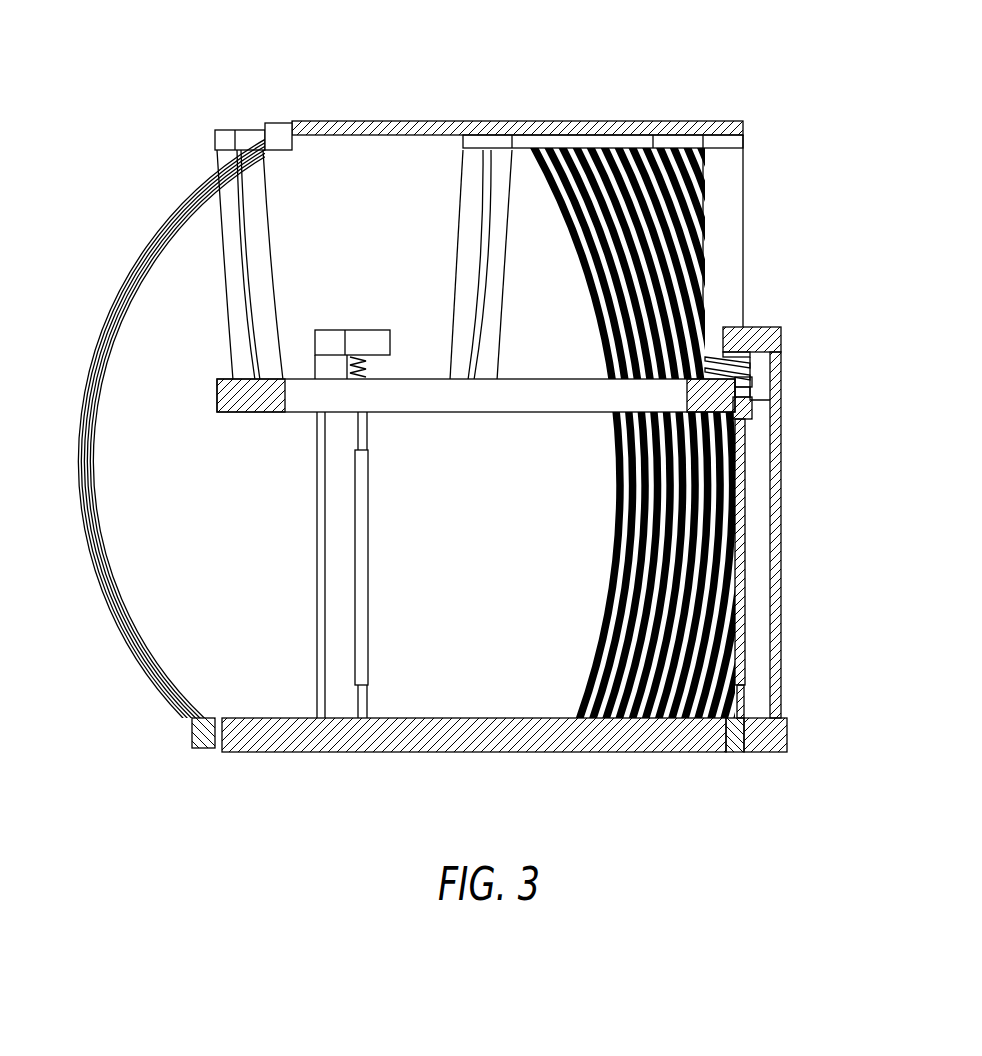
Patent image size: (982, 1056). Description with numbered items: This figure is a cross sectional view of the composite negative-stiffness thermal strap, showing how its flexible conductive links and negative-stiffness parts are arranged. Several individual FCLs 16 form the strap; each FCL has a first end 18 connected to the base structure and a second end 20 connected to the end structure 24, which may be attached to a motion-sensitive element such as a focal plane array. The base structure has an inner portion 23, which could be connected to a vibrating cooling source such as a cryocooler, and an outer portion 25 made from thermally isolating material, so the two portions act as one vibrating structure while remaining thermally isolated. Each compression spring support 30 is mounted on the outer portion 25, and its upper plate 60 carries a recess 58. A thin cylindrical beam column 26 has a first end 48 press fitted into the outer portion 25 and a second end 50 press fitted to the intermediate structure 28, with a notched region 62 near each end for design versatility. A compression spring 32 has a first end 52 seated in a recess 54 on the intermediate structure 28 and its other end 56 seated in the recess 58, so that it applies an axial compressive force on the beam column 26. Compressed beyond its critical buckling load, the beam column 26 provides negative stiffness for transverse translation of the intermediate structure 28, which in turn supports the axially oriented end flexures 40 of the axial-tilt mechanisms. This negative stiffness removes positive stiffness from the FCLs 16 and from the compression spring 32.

The FCL 16 is at (662, 175).
The first end 18 is at (205, 752).
The second end 20 is at (280, 123).
The inner portion 23 is at (325, 742).
The end structure 24 is at (410, 121).
The outer portion 25 is at (750, 750).
The beam column 26 is at (365, 598).
The intermediate structure 28 is at (558, 402).
The compression spring support 30 is at (318, 525).
The compression spring 32 is at (368, 373).
The end flexure 40 is at (740, 186).
The first end 48 is at (730, 730).
The second end 50 is at (740, 406).
The first end 52 is at (745, 382).
The recess 54 is at (757, 395).
The other end 56 is at (760, 350).
The recess 58 is at (736, 352).
The upper plate 60 is at (375, 331).
The notched region 62 is at (742, 430).